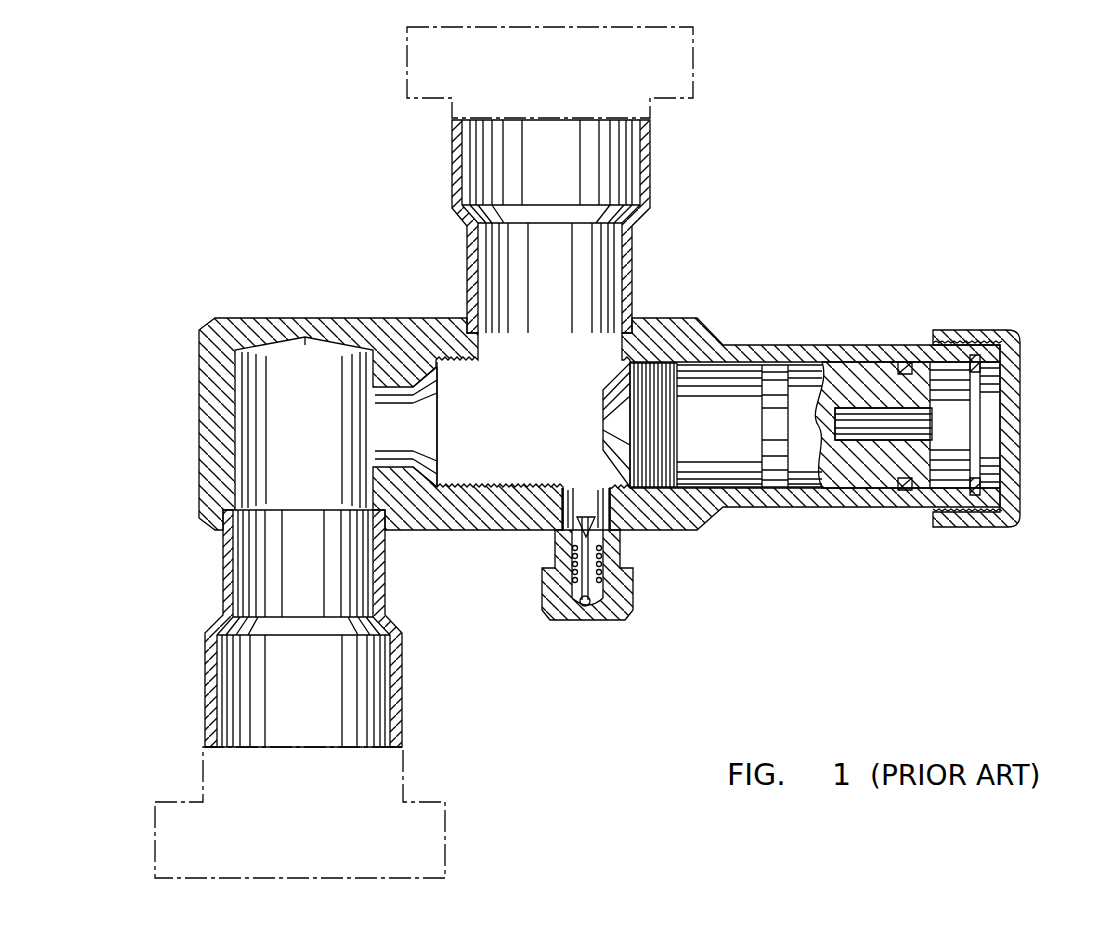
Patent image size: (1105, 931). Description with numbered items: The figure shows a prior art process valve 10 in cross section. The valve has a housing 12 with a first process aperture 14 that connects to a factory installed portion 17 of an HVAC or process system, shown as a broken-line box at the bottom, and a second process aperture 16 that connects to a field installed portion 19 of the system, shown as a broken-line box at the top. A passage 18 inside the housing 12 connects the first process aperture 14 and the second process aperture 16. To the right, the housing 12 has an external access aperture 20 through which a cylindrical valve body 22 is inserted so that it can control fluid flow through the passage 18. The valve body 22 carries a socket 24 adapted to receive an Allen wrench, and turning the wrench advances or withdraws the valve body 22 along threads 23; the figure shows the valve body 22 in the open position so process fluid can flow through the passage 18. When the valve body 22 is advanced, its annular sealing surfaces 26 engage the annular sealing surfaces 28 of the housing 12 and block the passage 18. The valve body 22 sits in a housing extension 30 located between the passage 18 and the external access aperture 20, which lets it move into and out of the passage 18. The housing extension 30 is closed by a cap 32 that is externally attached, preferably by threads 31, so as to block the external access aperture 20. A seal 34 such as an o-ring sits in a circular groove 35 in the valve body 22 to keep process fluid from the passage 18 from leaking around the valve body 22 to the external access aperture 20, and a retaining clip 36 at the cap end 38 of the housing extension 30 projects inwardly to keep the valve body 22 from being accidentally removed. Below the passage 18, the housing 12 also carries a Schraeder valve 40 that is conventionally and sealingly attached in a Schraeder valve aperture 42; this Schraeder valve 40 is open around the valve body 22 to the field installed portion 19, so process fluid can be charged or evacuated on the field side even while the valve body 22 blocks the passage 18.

The process valve 10 is at (768, 132).
The housing 12 is at (249, 318).
The first process aperture 14 is at (404, 718).
The second process aperture 16 is at (452, 194).
The factory installed portion 17 is at (284, 839).
The passage 18 is at (508, 403).
The field installed portion 19 is at (537, 85).
The external access aperture 20 is at (1022, 462).
The valve body 22 is at (720, 380).
The threads 23 is at (500, 487).
The socket 24 is at (918, 428).
The annular sealing surfaces 26 is at (578, 377).
The annular sealing surfaces 28 is at (437, 434).
The housing extension 30 is at (936, 366).
The threads 31 is at (985, 500).
The cap 32 is at (1010, 331).
The seal 34 is at (905, 360).
The circular groove 35 is at (886, 493).
The retaining clip 36 is at (1005, 367).
The cap end 38 is at (977, 497).
The Schraeder valve 40 is at (603, 621).
The Schraeder valve aperture 42 is at (585, 490).